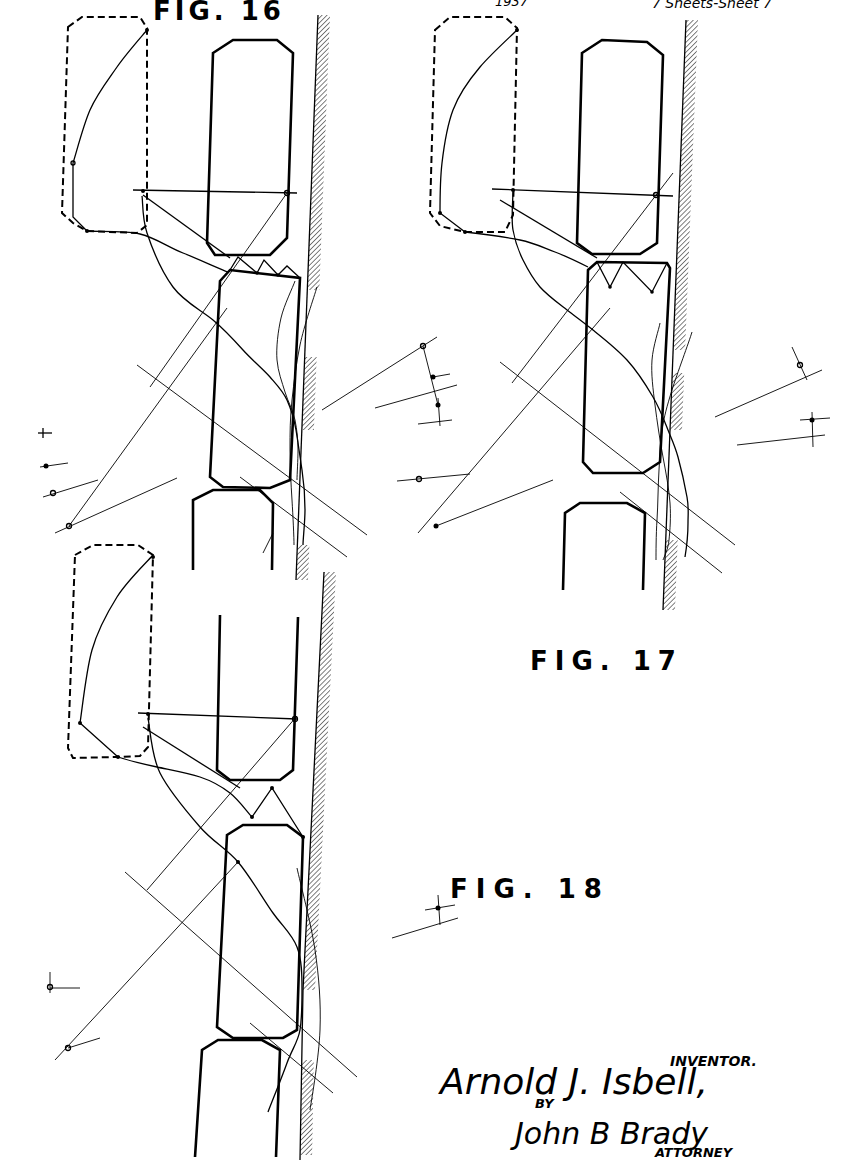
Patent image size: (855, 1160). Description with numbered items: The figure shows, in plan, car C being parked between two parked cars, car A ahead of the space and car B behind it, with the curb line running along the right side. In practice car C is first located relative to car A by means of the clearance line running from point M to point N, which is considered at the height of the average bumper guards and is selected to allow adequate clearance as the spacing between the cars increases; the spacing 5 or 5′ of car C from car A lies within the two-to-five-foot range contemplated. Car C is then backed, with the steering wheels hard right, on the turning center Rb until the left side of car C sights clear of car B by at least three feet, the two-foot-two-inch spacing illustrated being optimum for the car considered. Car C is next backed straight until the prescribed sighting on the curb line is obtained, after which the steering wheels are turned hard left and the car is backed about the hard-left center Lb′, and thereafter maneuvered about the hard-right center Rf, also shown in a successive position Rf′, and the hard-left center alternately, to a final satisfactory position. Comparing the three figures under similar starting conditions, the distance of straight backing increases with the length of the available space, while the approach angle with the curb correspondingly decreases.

In FIG. 16, the car being parked C is at (125, 167).
In FIG. 17, the car being parked C is at (432, 133).
In FIG. 18, the car being parked C is at (85, 607).
In FIG. 16, the parked car ahead of the space A is at (250, 147).
In FIG. 17, the parked car ahead of the space A is at (620, 147).
In FIG. 18, the parked car ahead of the space A is at (257, 697).
In FIG. 16, the parked car behind the space B is at (233, 530).
In FIG. 17, the parked car behind the space B is at (604, 546).
In FIG. 18, the parked car behind the space B is at (237, 1098).
In FIG. 16, the clearance line end point M is at (185, 223).
In FIG. 17, the clearance line end point M is at (548, 223).
In FIG. 18, the clearance line end point M is at (191, 750).
In FIG. 16, the clearance line end point N is at (157, 251).
In FIG. 17, the clearance line end point N is at (526, 249).
In FIG. 18, the clearance line end point N is at (185, 787).
In FIG. 16, the hard-right backing center Rb is at (297, 199).
In FIG. 17, the hard-right backing center Rb is at (663, 200).
In FIG. 18, the hard-right backing center Rb is at (302, 722).
In FIG. 16, the hard-left backing center Lb′ is at (133, 420).
In FIG. 17, the hard-left backing center Lb′ is at (514, 428).
In FIG. 18, the hard-left backing center Lb′ is at (134, 976).
In FIG. 18, the hard-right maneuvering center Rf is at (425, 916).
In FIG. 16, the hard-right maneuvering center Rf′ is at (380, 373).
In FIG. 17, the hard-right maneuvering center Rf′ is at (768, 377).
In FIG. 17, the spacing of car C from car A 5 is at (582, 100).
In FIG. 16, the spacing of car C from car A 5′ is at (212, 88).
In FIG. 18, the spacing of car C from car A 5′ is at (220, 638).